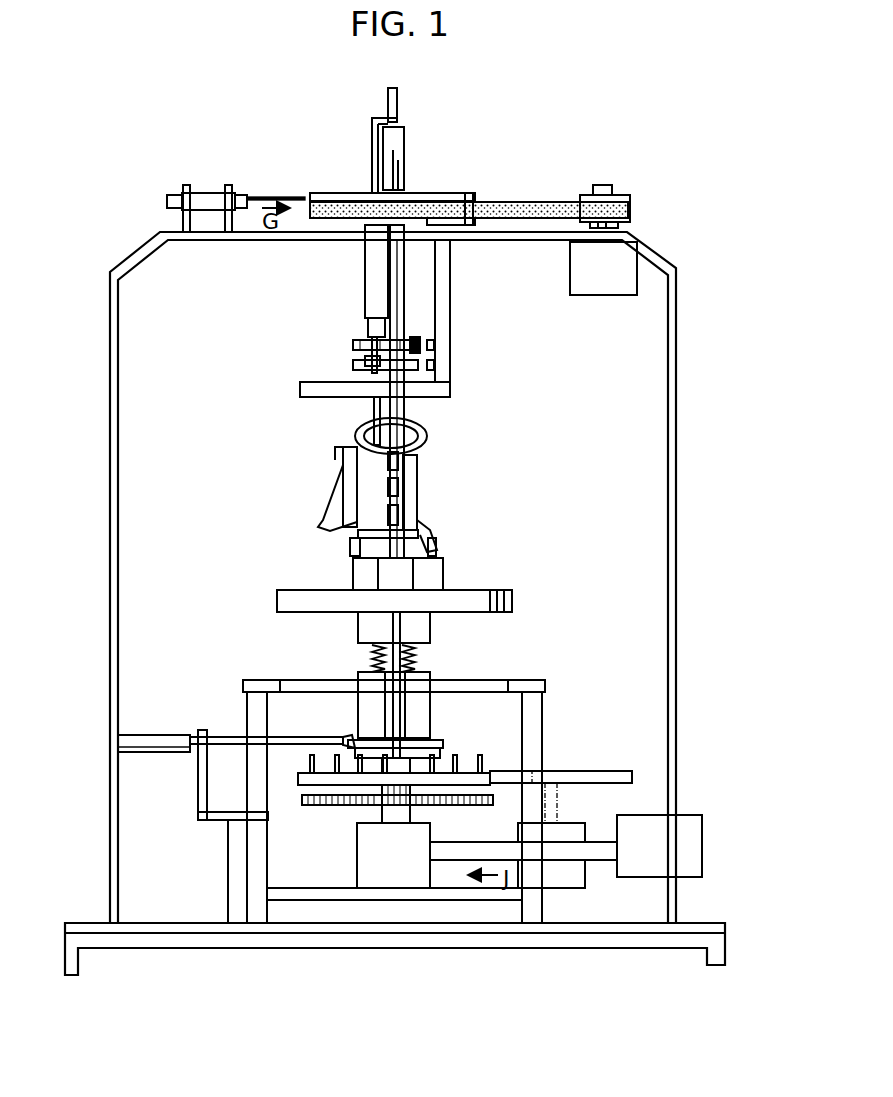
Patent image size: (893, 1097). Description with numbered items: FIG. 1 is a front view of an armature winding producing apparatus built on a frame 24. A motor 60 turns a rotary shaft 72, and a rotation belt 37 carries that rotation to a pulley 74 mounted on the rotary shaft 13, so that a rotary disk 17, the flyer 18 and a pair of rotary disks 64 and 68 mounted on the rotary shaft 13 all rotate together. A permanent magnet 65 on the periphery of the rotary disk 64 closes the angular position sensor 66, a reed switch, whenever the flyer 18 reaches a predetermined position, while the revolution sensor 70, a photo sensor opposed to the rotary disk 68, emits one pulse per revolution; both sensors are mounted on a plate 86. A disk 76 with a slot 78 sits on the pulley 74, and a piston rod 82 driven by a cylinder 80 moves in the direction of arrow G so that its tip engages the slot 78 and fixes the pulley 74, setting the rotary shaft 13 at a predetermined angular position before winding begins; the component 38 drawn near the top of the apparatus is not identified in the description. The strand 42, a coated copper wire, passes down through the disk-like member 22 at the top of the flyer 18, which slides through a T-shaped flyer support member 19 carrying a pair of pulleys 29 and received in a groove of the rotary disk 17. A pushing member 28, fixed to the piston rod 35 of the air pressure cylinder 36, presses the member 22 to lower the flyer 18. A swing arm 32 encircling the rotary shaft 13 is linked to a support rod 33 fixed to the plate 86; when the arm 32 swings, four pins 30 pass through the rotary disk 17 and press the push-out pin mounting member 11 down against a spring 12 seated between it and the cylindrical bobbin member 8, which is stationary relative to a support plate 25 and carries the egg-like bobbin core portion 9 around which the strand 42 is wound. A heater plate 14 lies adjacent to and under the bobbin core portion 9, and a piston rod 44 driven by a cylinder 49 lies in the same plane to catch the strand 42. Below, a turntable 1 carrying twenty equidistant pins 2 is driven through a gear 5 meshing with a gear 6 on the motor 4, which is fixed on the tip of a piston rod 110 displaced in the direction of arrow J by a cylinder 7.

The turntable 1 is at (598, 770).
The pins 2 is at (480, 770).
The motor 4 is at (370, 858).
The gear 5 is at (310, 808).
The gear 6 is at (385, 805).
The cylinder 7 is at (700, 820).
The bobbin member 8 is at (430, 725).
The bobbin core portion 9 is at (440, 742).
The push-out pin mounting member 11 is at (358, 633).
The spring 12 is at (410, 655).
The rotary shaft 13 is at (405, 290).
The heater plate 14 is at (352, 742).
The rotary disk 17 is at (277, 593).
The flyer 18 is at (400, 715).
The flyer support member 19 is at (440, 573).
The disk-like member 22 is at (355, 535).
The frame 24 is at (678, 290).
The support plate 25 is at (545, 686).
The pushing member 28 is at (330, 505).
The pulleys 29 is at (400, 490).
The pins 30 is at (350, 472).
The swing arm 32 is at (430, 450).
The support rod 33 is at (377, 415).
The piston rod 35 is at (372, 350).
The air pressure cylinder 36 is at (365, 282).
The rotation belt 37 is at (545, 204).
The cylinder 38 is at (404, 170).
The strand 42 is at (397, 127).
The piston rod 44 is at (275, 740).
The cylinder 49 is at (150, 735).
The motor 60 is at (603, 296).
The rotary disk 64 is at (353, 340).
The permanent magnet 65 is at (420, 343).
The angular position sensor 66 is at (434, 345).
The rotary disk 68 is at (355, 365).
The revolution sensor 70 is at (434, 366).
The rotary shaft 72 is at (612, 190).
The pulley 74 is at (475, 222).
The disk 76 is at (470, 195).
The slot 78 is at (320, 193).
The cylinder 80 is at (207, 192).
The piston rod 82 is at (277, 197).
The plate 86 is at (450, 393).
The piston rod 110 is at (493, 848).